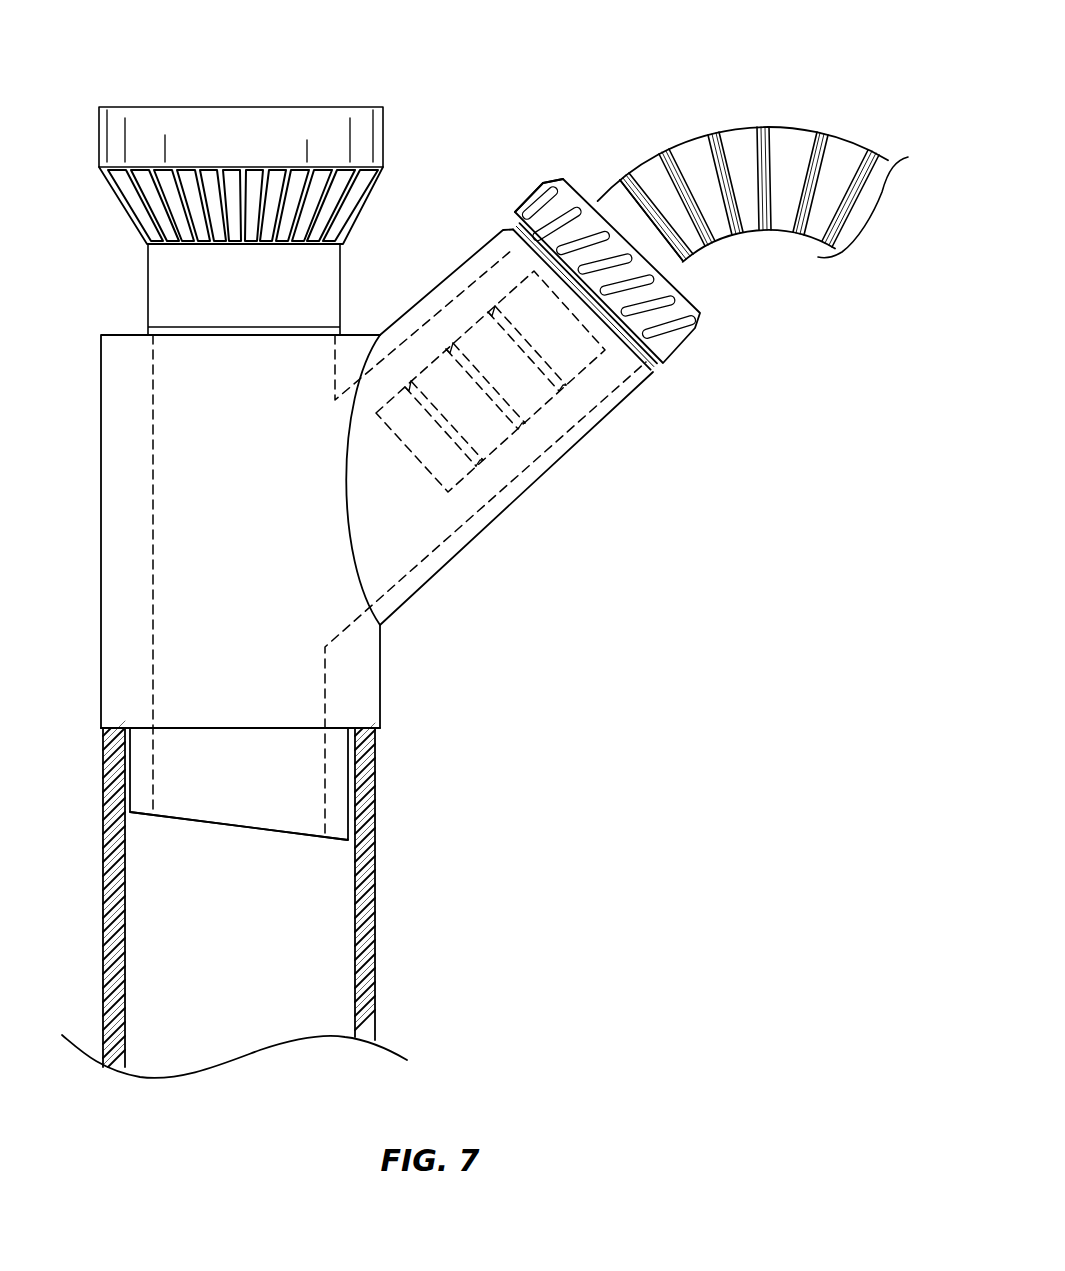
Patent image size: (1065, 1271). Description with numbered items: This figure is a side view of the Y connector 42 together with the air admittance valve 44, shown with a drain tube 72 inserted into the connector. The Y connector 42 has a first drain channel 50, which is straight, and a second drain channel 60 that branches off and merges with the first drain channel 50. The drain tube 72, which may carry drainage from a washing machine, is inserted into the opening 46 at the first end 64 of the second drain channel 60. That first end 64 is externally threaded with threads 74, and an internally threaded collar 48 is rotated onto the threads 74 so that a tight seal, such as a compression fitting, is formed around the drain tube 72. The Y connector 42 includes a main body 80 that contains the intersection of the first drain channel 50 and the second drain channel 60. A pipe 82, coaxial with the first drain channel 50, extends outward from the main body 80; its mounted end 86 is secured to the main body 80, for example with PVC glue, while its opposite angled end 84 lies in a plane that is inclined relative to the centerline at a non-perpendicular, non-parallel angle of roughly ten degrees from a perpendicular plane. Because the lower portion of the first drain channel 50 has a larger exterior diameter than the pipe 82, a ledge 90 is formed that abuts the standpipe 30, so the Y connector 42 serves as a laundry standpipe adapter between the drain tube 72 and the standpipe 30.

The standpipe 30 is at (113, 955).
The Y connector 42 is at (491, 541).
The air admittance valve 44 is at (136, 107).
The opening 46 is at (680, 283).
The internally threaded collar 48 is at (688, 336).
The first drain channel 50 is at (236, 416).
The second drain channel 60 is at (365, 498).
The first end of second drain channel 64 is at (585, 184).
The drain tube 72 is at (698, 160).
The threads 74 is at (658, 371).
The main body 80 is at (113, 525).
The pipe 82 is at (166, 786).
The angled end 84 is at (228, 823).
The mounted end 86 is at (267, 730).
The ledge 90 is at (366, 723).